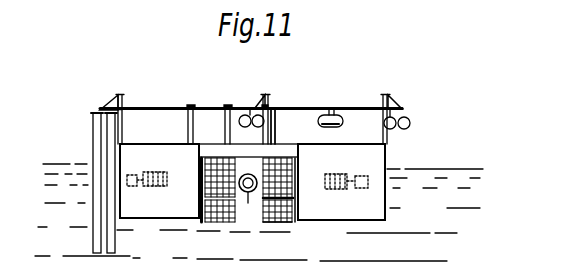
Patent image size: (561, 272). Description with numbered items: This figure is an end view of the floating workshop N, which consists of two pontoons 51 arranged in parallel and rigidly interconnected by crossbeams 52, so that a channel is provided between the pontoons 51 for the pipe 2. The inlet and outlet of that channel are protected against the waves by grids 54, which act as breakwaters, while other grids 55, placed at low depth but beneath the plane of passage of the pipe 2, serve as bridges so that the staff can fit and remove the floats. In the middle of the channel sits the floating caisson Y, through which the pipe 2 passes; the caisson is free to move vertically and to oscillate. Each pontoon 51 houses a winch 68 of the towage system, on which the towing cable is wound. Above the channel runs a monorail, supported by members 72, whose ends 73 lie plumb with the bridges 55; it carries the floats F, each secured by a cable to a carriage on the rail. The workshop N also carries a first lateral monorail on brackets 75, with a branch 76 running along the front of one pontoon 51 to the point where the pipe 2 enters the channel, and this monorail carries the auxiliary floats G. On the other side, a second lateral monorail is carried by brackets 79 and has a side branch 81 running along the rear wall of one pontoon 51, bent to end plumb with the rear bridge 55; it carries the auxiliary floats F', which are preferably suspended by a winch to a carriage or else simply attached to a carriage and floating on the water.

The pipe 2 is at (248, 198).
The pontoon 51 is at (387, 197).
The crossbeam 52 is at (218, 153).
The grid 54 is at (278, 223).
The grid 55 is at (296, 197).
The winch 68 is at (158, 187).
The supporting member 72 is at (278, 134).
The monorail end 73 is at (250, 107).
The bracket 75 is at (119, 94).
The branch 76 is at (151, 107).
The bracket 79 is at (388, 101).
The side branch 81 is at (363, 107).
The auxiliary float G is at (92, 135).
The float F is at (251, 127).
The auxiliary float F' is at (385, 103).
The floating caisson Y is at (219, 186).
The floating workshop N is at (166, 221).